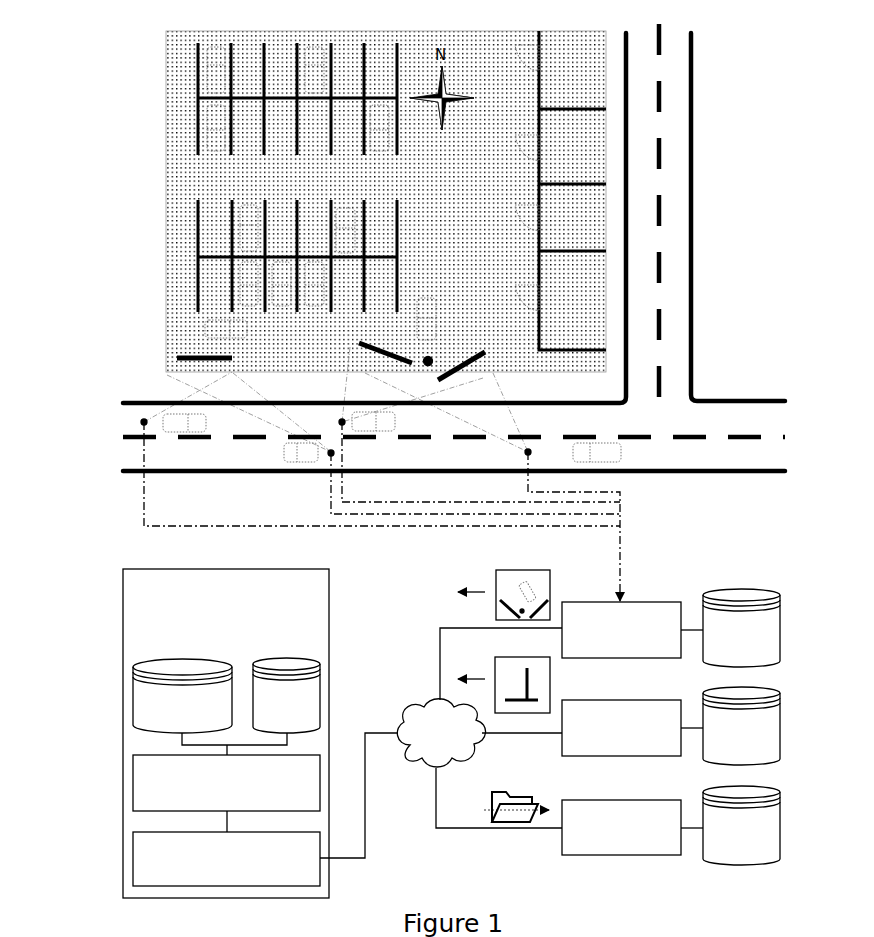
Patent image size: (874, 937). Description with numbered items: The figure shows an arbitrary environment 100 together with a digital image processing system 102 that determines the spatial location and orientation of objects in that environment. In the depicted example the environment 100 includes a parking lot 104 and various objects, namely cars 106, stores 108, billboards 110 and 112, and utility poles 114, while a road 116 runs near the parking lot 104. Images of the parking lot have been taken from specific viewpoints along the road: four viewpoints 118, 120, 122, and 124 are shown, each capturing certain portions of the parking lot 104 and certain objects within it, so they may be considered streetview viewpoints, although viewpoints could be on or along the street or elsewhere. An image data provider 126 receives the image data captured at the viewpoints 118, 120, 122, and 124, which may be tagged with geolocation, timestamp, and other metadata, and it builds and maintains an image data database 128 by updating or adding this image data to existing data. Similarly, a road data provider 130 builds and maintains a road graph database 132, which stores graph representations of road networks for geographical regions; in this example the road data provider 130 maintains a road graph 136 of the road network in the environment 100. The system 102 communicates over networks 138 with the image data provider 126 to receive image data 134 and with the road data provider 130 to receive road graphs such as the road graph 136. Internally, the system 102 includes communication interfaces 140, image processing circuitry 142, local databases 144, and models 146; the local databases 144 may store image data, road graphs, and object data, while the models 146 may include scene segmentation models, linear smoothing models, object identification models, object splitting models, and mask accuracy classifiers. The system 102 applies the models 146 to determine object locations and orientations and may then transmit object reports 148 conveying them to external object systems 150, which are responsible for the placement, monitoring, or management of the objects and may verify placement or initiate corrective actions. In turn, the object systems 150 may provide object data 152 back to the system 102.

The environment 100 is at (82, 58).
The digital image processing system 102 is at (319, 595).
The parking lot 104 is at (171, 203).
The cars 106 is at (436, 326).
The stores 108 is at (539, 270).
The billboard 110 is at (364, 346).
The billboard 112 is at (476, 352).
The utility poles 114 is at (431, 358).
The road 116 is at (558, 414).
The viewpoint 118 is at (144, 422).
The viewpoint 120 is at (331, 453).
The viewpoint 122 is at (342, 422).
The viewpoint 124 is at (528, 452).
The image data provider 126 is at (672, 650).
The image data database 128 is at (783, 623).
The road data provider 130 is at (672, 748).
The road graph database 132 is at (783, 721).
The image data 134 is at (496, 578).
The road graph 136 is at (495, 672).
The networks 138 is at (412, 758).
The communication interfaces 140 is at (306, 869).
The image processing circuitry 142 is at (306, 805).
The local databases 144 is at (175, 658).
The models 146 is at (274, 658).
The object reports 148 is at (505, 790).
The object systems 150 is at (670, 838).
The object data 152 is at (783, 821).